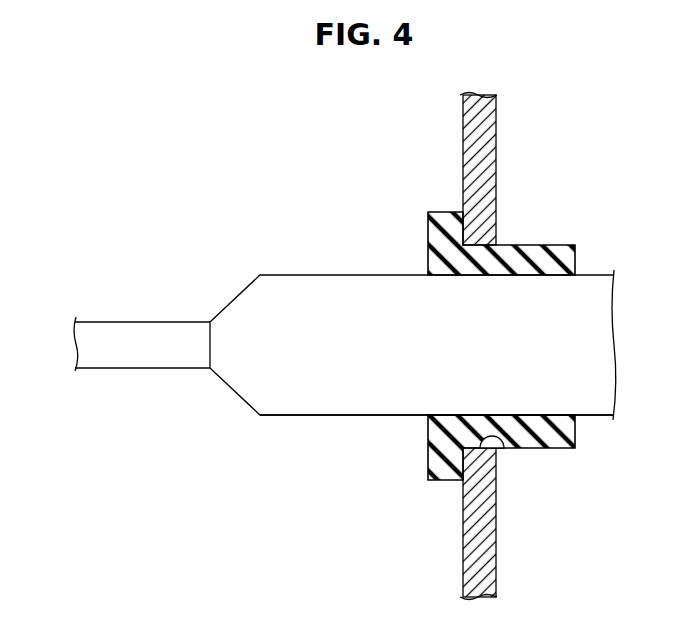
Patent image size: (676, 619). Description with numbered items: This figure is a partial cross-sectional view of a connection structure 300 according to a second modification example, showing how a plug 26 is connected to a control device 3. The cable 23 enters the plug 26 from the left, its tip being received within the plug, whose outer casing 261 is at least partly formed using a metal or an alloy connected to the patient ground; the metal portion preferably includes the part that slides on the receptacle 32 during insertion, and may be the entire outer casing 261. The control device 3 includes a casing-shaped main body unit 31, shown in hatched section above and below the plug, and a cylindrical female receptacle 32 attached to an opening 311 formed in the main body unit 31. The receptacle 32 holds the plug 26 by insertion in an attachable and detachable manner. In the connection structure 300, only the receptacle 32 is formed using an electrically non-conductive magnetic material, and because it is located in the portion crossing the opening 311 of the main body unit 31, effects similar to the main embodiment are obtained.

The connection structure 300 is at (336, 131).
The cable 23 is at (138, 322).
The plug 26 is at (315, 275).
The outer casing 261 is at (367, 363).
The control device 3 is at (556, 172).
The main body unit 31 is at (496, 183).
The receptacle 32 is at (518, 245).
The opening 311 is at (500, 439).